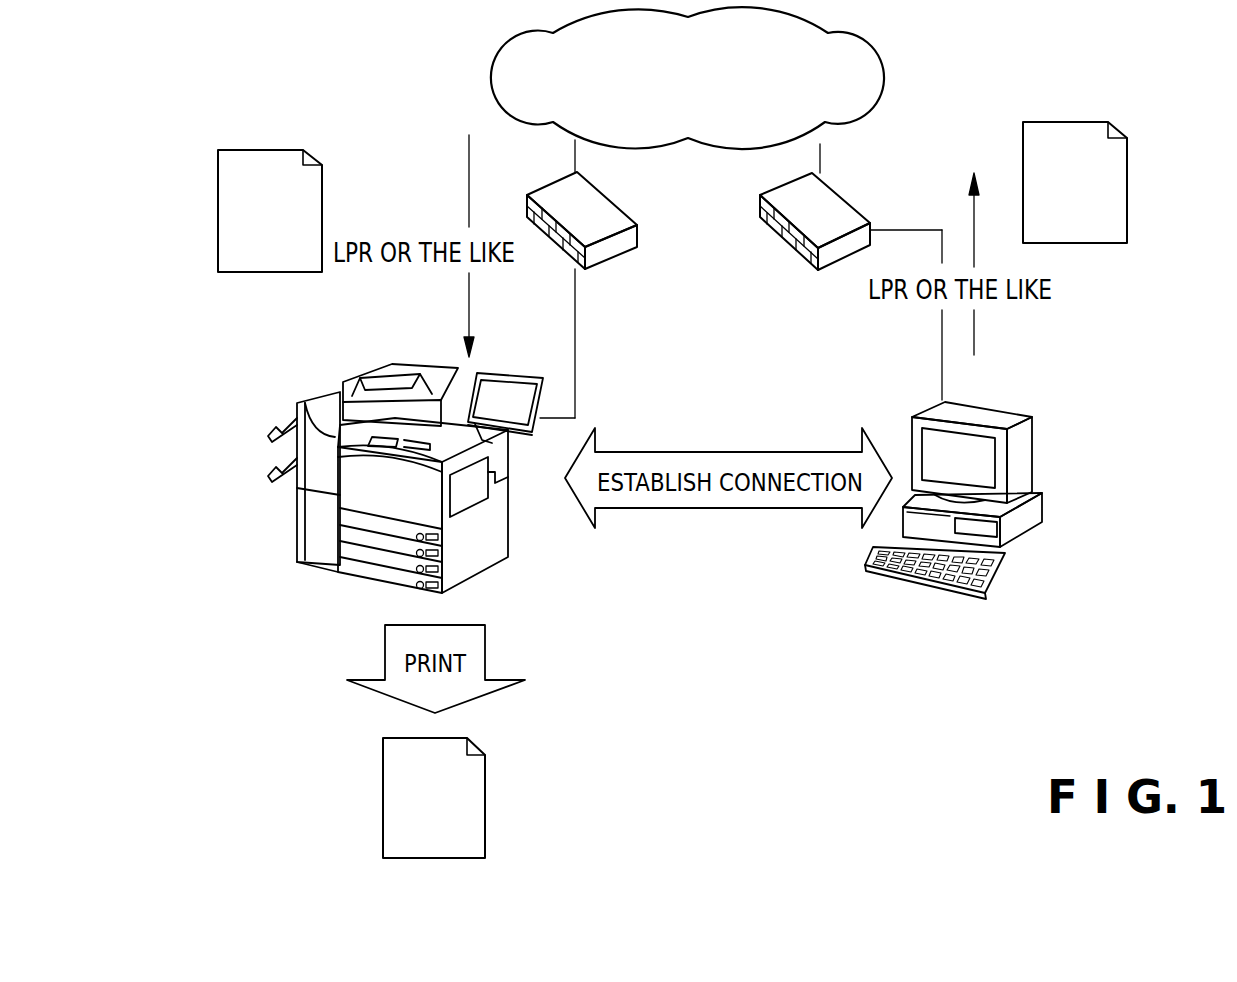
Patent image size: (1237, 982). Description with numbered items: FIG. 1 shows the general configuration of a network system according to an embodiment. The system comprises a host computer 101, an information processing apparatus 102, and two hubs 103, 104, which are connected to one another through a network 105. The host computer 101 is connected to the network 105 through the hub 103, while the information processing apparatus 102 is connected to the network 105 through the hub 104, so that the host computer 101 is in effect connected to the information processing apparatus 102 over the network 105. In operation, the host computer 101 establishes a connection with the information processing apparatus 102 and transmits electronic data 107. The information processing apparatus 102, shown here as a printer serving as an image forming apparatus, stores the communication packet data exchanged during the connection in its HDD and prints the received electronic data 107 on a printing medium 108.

The host computer 101 is at (1032, 448).
The information processing apparatus 102 is at (508, 543).
The hub 103 is at (836, 186).
The hub 104 is at (610, 193).
The network 105 is at (886, 78).
The electronic data 107 is at (218, 207).
The printing medium 108 is at (383, 795).